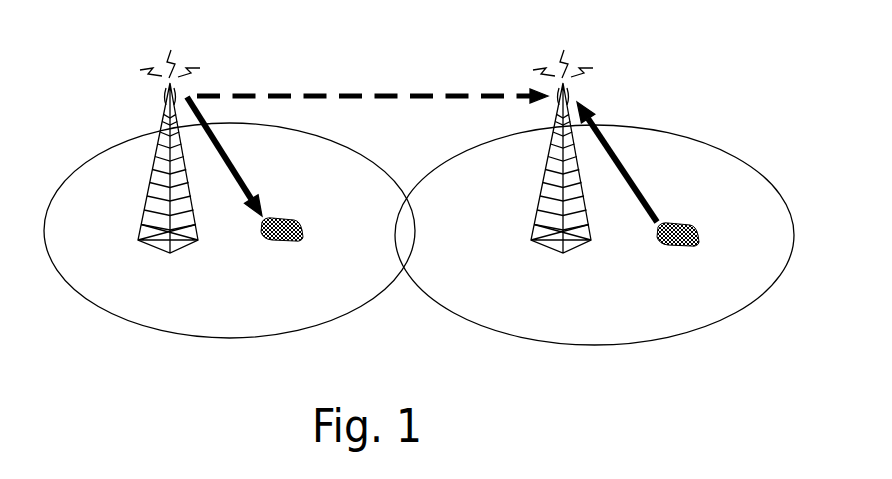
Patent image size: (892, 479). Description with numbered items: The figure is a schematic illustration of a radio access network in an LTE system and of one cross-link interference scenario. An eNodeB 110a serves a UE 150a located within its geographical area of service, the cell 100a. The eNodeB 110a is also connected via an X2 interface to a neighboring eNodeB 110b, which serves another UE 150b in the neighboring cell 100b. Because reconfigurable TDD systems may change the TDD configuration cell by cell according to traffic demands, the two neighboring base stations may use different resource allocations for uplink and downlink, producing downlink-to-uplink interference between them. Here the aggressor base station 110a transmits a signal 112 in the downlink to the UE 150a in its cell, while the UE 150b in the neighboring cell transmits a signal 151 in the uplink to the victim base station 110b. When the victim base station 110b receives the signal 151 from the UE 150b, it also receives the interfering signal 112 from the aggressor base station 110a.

The cell 100a is at (203, 338).
The cell 100b is at (630, 345).
The eNodeB 110a is at (183, 253).
The eNodeB 110b is at (576, 253).
The signal 112 is at (382, 85).
The signal 151 is at (620, 146).
The UE 150a is at (304, 232).
The UE 150b is at (699, 240).